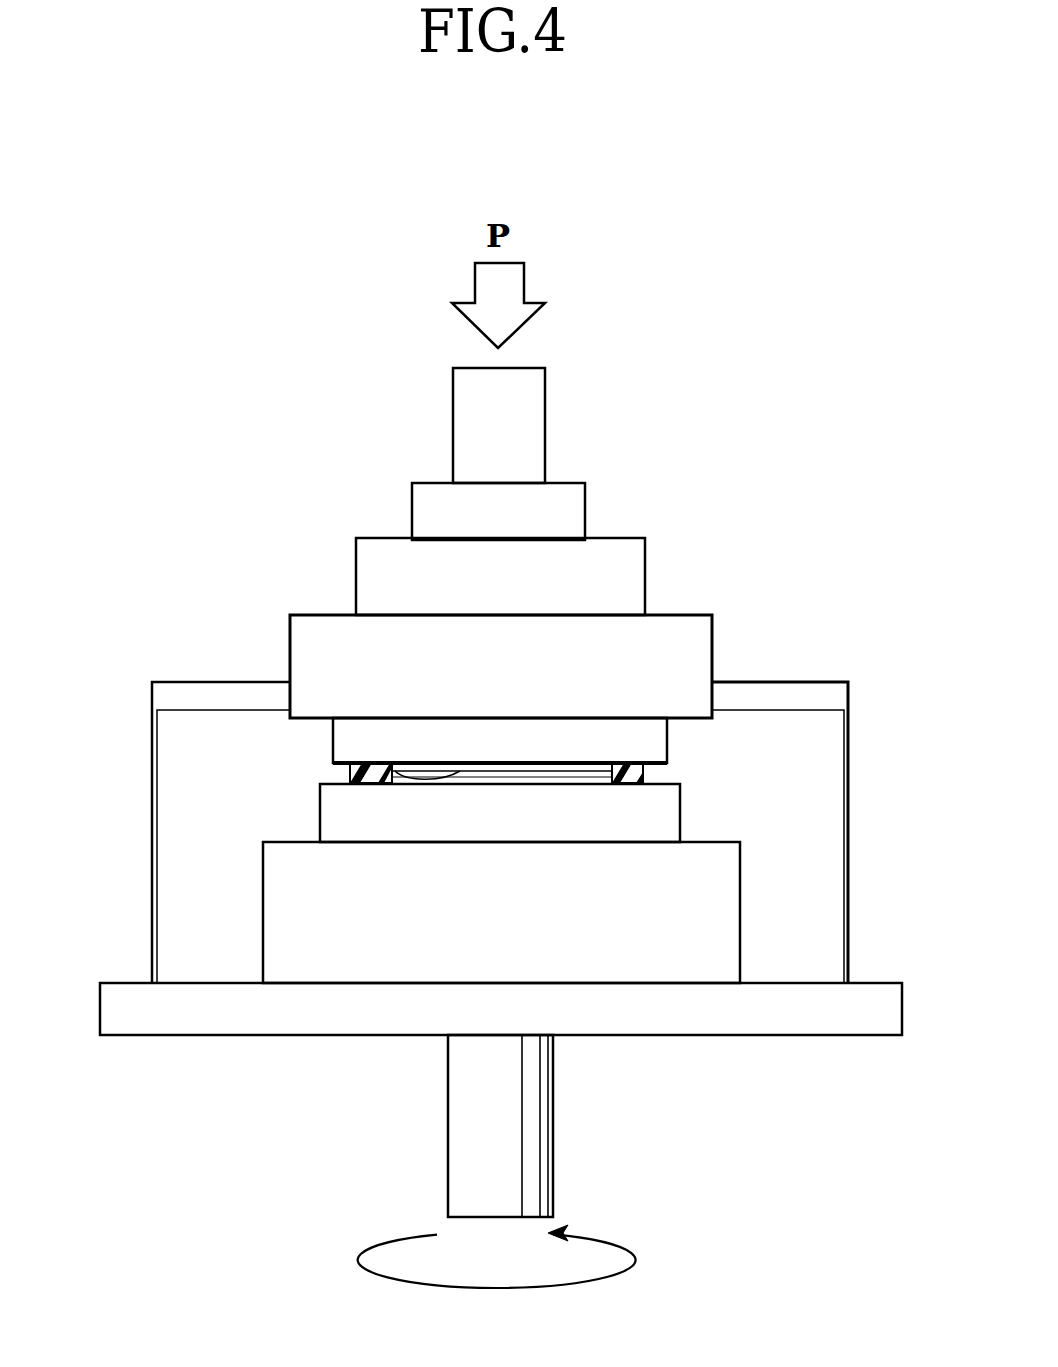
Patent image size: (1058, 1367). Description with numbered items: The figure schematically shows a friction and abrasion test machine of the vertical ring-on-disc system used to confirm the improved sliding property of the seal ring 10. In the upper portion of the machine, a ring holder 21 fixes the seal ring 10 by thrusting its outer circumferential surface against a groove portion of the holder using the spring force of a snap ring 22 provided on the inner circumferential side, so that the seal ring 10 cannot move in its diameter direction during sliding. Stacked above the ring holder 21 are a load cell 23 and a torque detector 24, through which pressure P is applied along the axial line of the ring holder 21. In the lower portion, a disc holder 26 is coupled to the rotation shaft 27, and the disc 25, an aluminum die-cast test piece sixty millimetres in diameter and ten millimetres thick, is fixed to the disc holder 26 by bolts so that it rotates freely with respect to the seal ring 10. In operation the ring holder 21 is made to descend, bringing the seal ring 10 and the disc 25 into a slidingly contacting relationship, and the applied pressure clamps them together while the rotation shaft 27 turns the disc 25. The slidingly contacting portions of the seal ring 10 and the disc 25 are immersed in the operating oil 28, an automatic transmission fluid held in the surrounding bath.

The seal ring 10 is at (650, 775).
The ring holder 21 is at (672, 735).
The snap ring 22 is at (343, 762).
The load cell 23 is at (605, 577).
The torque detector 24 is at (547, 508).
The disc 25 is at (337, 820).
The disc holder 26 is at (287, 903).
The rotation shaft 27 is at (463, 1150).
The operating oil 28 is at (813, 938).